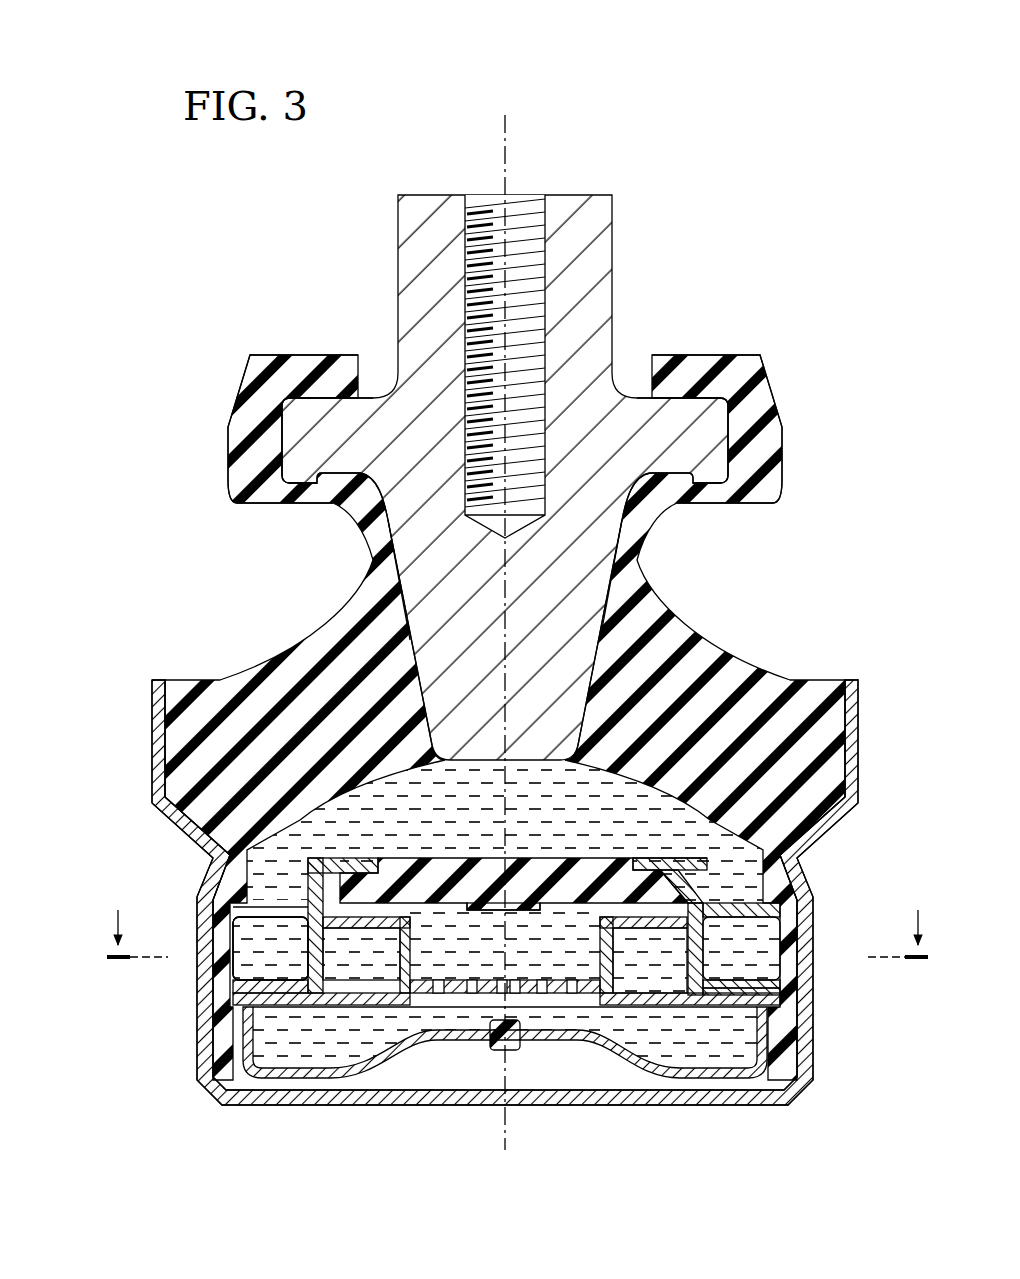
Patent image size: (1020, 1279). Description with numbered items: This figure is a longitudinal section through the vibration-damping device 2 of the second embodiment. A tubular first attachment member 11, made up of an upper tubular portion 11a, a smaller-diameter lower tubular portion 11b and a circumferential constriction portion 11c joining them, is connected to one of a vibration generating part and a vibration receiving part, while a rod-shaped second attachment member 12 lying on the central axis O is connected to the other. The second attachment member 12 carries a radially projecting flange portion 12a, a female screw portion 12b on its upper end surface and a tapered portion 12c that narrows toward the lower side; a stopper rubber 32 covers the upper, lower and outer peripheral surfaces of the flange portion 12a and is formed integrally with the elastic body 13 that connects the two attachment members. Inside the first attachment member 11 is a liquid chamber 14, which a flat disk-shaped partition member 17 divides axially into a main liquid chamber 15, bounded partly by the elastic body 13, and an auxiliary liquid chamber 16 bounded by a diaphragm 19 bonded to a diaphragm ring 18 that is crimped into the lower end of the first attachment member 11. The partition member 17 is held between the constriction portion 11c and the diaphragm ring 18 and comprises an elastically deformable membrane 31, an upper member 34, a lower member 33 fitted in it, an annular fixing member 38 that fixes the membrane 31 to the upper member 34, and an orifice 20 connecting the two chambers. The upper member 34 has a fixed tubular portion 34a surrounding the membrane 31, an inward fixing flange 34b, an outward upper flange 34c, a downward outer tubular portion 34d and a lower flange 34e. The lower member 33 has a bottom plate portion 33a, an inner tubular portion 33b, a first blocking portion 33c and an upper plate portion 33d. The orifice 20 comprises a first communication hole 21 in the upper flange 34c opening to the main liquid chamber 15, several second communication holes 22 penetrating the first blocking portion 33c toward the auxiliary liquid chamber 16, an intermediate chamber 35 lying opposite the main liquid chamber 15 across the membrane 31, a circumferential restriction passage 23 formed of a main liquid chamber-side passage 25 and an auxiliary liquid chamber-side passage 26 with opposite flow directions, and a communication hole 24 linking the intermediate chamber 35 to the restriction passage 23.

The vibration-damping device 2 is at (500, 608).
The central axis O is at (508, 132).
The first attachment member 11 is at (490, 842).
The upper tubular portion 11a is at (150, 733).
The lower tubular portion 11b is at (198, 1005).
The constriction portion 11c is at (205, 866).
The second attachment member 12 is at (581, 431).
The flange portion 12a is at (722, 430).
The female screw portion 12b is at (487, 212).
The tapered portion 12c is at (392, 580).
The elastic body 13 is at (505, 678).
The liquid chamber 14 is at (571, 1108).
The main liquid chamber 15 is at (735, 798).
The auxiliary liquid chamber 16 is at (755, 1032).
The partition member 17 is at (287, 1015).
The diaphragm ring 18 is at (790, 1060).
The diaphragm 19 is at (567, 1040).
The orifice 20 is at (262, 970).
The first communication hole 21 is at (275, 910).
The second communication hole 22 is at (437, 992).
The restriction passage 23 is at (270, 948).
The communication hole 24 is at (407, 957).
The main liquid chamber-side passage 25 is at (757, 956).
The auxiliary liquid chamber-side passage 26 is at (665, 972).
The membrane 31 is at (552, 852).
The stopper rubber 32 is at (748, 352).
The lower member 33 is at (490, 908).
The bottom plate portion 33a is at (683, 1005).
The inner tubular portion 33b is at (523, 1063).
The first blocking portion 33c is at (527, 994).
The upper plate portion 33d is at (340, 916).
The upper member 34 is at (794, 810).
The fixed tubular portion 34a is at (702, 882).
The fixing flange 34b is at (690, 860).
The upper flange 34c is at (775, 912).
The outer tubular portion 34d is at (775, 972).
The lower flange 34e is at (777, 990).
The intermediate chamber 35 is at (555, 962).
The fixing member 38 is at (667, 832).